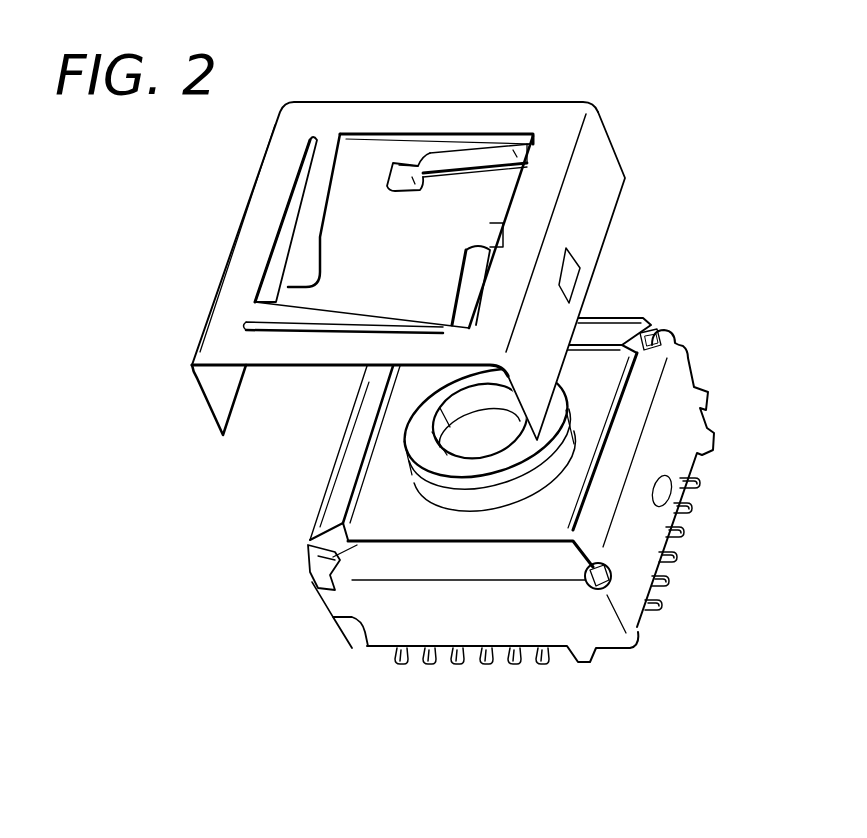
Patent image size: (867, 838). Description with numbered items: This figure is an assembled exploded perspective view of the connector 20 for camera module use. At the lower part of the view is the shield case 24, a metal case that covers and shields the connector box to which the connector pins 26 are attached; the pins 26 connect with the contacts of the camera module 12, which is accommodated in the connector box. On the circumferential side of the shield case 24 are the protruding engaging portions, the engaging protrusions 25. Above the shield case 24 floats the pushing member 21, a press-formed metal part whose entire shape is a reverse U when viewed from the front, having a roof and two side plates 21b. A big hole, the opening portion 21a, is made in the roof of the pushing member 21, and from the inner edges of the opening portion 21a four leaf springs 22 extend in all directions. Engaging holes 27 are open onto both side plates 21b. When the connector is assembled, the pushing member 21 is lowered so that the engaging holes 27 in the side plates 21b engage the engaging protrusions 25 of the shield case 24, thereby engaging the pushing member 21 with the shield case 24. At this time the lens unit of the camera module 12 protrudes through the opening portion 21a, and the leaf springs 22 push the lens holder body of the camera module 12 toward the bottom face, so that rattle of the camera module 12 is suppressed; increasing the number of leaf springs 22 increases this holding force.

The connector for camera module use 20 is at (541, 92).
The pushing member 21 is at (499, 117).
The opening portion 21a is at (357, 172).
The side plates 21b is at (604, 143).
The leaf springs 22 is at (317, 178).
The engaging holes 27 is at (582, 262).
The shield case 24 is at (356, 627).
The camera module 12 is at (423, 451).
The engaging protrusions 25 is at (665, 493).
The connector pins 26 is at (683, 532).